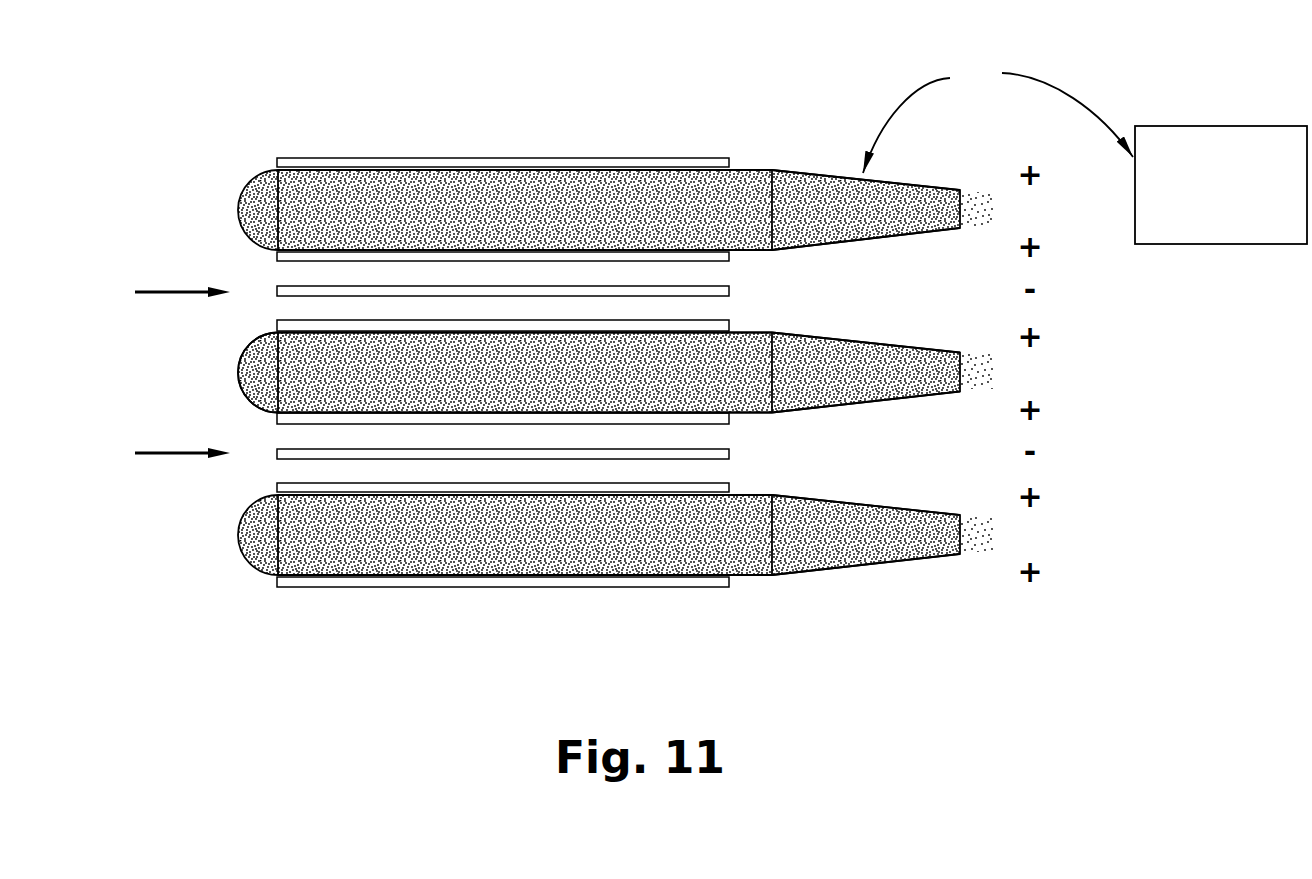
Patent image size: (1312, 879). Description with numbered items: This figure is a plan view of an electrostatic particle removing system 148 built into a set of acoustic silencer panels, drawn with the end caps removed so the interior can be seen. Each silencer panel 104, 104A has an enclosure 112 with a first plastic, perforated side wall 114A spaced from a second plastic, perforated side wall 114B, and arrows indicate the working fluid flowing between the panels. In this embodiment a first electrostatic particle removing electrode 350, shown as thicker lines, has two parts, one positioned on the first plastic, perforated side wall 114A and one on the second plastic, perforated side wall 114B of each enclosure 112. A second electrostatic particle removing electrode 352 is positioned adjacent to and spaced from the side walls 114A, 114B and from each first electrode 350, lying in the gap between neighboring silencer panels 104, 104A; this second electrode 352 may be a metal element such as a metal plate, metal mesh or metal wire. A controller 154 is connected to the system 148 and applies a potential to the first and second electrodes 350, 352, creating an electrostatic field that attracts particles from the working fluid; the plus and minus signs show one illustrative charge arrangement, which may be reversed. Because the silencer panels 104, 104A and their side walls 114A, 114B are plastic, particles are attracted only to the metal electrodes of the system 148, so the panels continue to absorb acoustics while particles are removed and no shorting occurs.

The silencer panel 104 is at (245, 170).
The silencer panel 104A is at (237, 377).
The enclosure 112 is at (743, 168).
The first plastic, perforated side wall 114A is at (757, 168).
The second plastic, perforated side wall 114B is at (757, 250).
The electrostatic particle removing system 148 is at (998, 117).
The controller 154 is at (1199, 218).
The first electrostatic particle removing electrode 350 is at (345, 322).
The second electrostatic particle removing electrode 352 is at (630, 445).